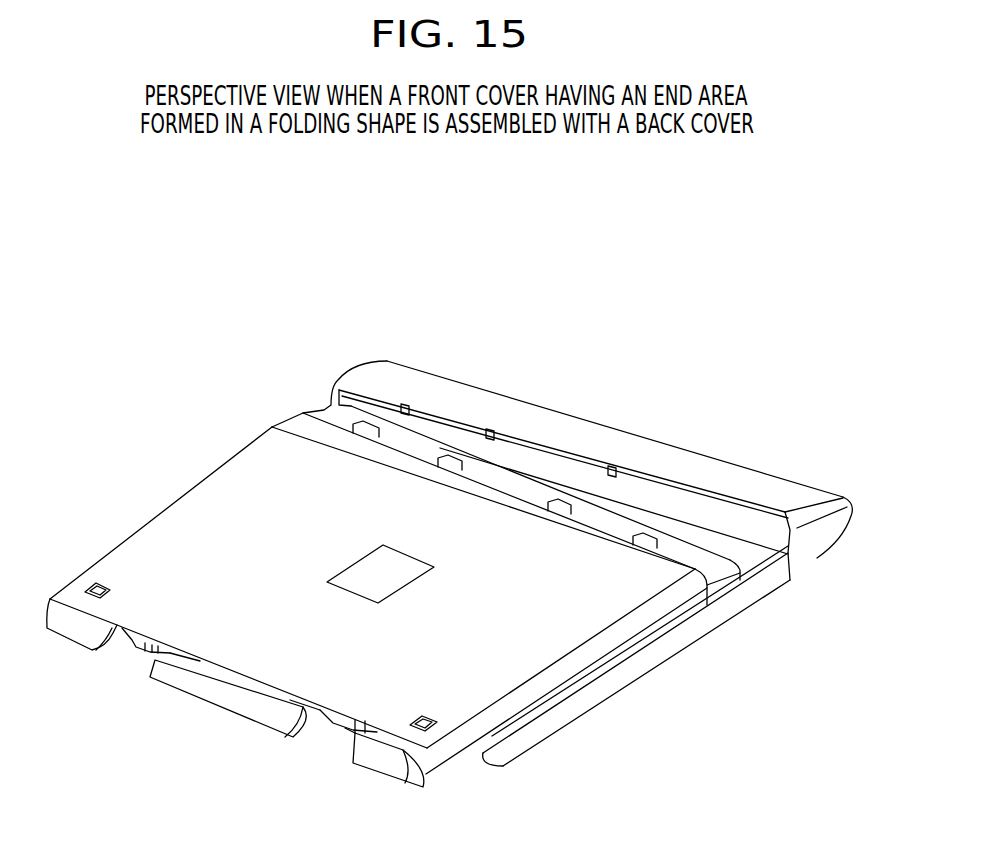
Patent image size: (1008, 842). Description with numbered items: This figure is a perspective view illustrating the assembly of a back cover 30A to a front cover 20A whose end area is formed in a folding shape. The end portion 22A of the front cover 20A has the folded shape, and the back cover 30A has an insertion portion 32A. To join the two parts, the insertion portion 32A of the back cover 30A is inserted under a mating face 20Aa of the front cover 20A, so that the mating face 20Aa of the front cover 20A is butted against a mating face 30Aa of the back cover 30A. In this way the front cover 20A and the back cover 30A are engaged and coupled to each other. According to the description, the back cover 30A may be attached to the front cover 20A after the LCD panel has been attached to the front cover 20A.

The front cover 20A is at (625, 676).
The back cover 30A is at (573, 662).
The mating face 20Aa is at (513, 430).
The mating face 30Aa is at (379, 464).
The end portion 22A is at (603, 427).
The insertion portion 32A is at (608, 528).